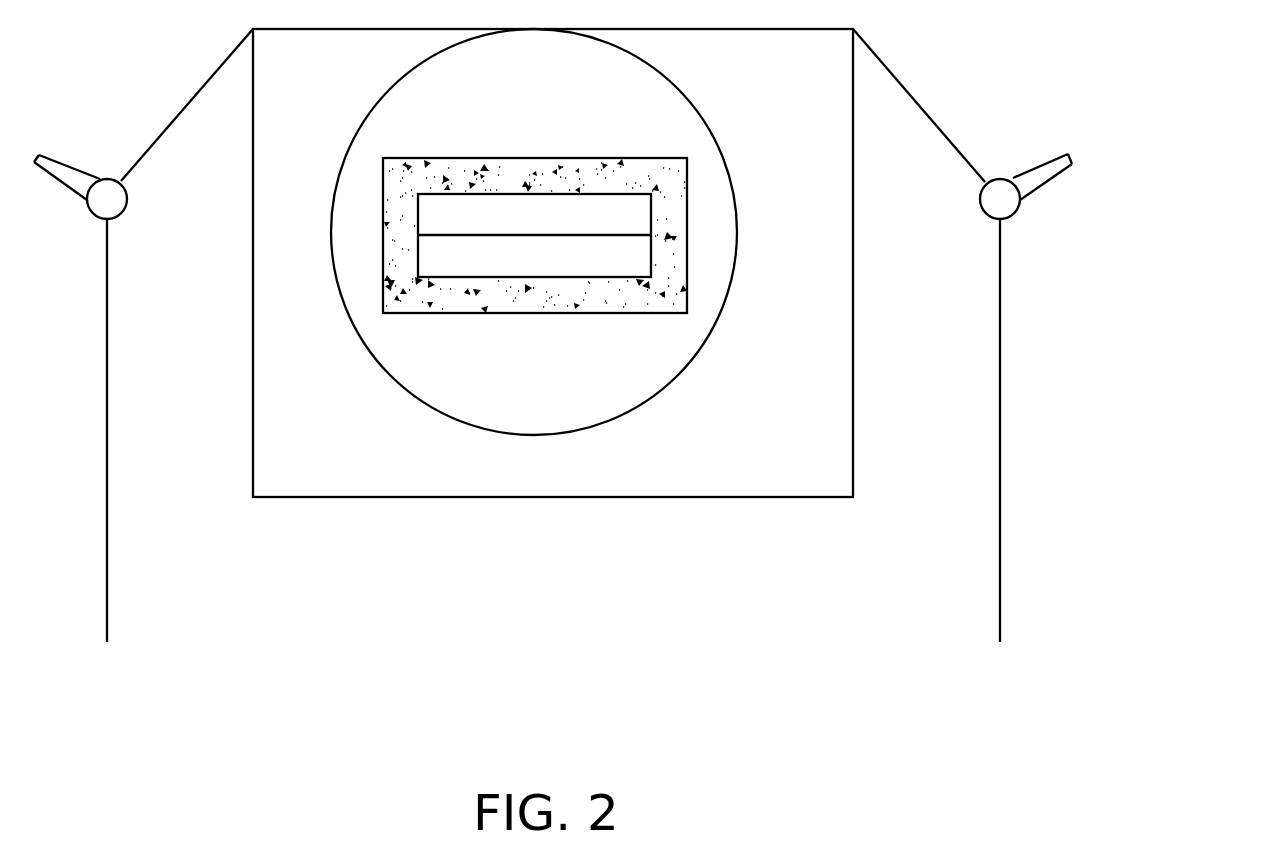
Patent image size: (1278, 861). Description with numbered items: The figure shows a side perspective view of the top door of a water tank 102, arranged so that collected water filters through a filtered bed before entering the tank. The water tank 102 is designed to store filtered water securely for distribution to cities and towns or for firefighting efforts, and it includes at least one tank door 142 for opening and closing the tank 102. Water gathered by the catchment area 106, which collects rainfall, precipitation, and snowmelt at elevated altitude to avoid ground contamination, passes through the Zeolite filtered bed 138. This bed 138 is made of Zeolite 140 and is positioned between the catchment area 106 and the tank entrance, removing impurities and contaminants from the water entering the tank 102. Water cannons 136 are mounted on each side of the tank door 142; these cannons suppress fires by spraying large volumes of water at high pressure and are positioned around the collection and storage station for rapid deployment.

The water tank 102 is at (439, 370).
The catchment area 106 is at (950, 392).
The water cannon 136 is at (1035, 174).
The Zeolite filtered bed 138 is at (687, 278).
The Zeolite 140 is at (557, 297).
The tank door 142 is at (299, 448).